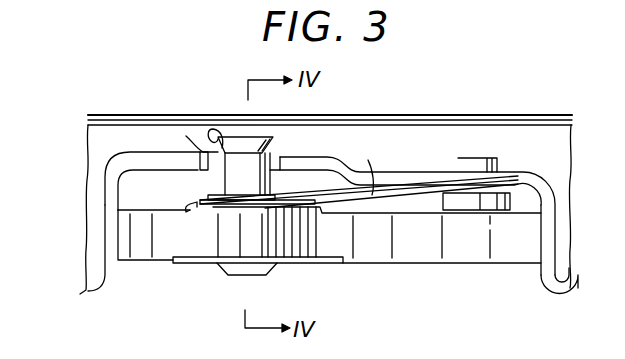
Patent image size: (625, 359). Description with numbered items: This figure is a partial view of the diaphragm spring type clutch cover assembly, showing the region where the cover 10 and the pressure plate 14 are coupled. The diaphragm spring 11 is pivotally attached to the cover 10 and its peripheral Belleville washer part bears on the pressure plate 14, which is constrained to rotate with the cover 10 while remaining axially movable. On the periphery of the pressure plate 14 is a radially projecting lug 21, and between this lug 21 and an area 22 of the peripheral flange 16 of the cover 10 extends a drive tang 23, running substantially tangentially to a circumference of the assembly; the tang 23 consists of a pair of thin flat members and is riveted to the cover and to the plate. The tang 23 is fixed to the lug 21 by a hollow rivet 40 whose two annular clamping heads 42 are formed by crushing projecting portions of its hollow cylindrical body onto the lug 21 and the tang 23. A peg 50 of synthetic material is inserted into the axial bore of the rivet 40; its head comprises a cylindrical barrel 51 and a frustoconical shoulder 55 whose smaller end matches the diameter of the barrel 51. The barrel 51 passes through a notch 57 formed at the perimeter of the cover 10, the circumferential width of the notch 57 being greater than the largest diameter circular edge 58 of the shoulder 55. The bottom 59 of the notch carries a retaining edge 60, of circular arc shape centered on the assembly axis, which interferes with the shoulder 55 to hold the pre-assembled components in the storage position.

The cover 10 is at (545, 293).
The diaphragm spring 11 is at (597, 206).
The pressure plate 14 is at (137, 266).
The peripheral flange 16 is at (586, 286).
The lug 21 is at (205, 243).
The area of peripheral flange 22 is at (408, 172).
The drive tang 23 is at (378, 196).
The hollow rivet 40 is at (244, 191).
The annular clamping head 42 is at (188, 208).
The peg 50 is at (261, 132).
The cylindrical barrel 51 is at (268, 177).
The shoulder 55 is at (210, 141).
The notch 57 is at (206, 166).
The largest diameter circular edge 58 is at (216, 128).
The bottom of the notch 59 is at (286, 159).
The retaining edge 60 is at (186, 136).